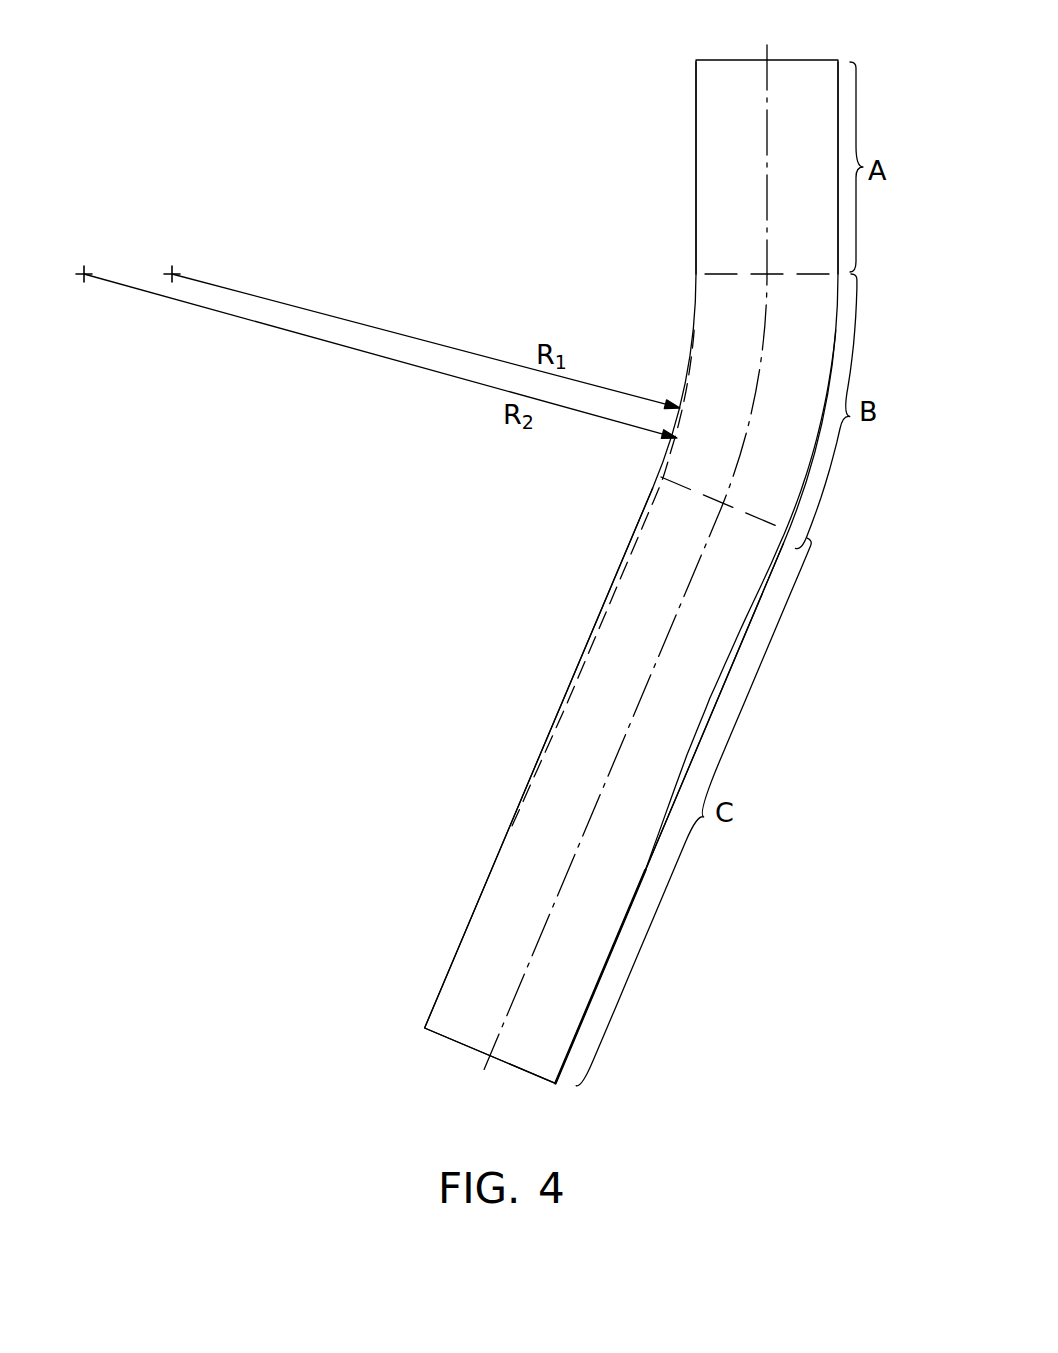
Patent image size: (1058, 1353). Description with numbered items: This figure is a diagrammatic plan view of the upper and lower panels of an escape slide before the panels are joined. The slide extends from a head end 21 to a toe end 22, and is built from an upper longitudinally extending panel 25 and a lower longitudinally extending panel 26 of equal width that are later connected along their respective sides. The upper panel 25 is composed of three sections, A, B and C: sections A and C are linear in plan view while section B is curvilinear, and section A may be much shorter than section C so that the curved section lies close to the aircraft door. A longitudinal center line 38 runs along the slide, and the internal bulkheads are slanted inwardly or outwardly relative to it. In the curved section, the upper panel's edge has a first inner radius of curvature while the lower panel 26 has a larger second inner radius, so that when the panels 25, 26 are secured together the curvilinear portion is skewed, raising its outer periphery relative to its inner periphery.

The head end 21 is at (637, 557).
The toe end 22 is at (440, 1046).
The upper longitudinally extending panel 25 is at (699, 195).
The lower longitudinally extending panel 26 is at (785, 574).
The longitudinal center line 38 is at (658, 657).